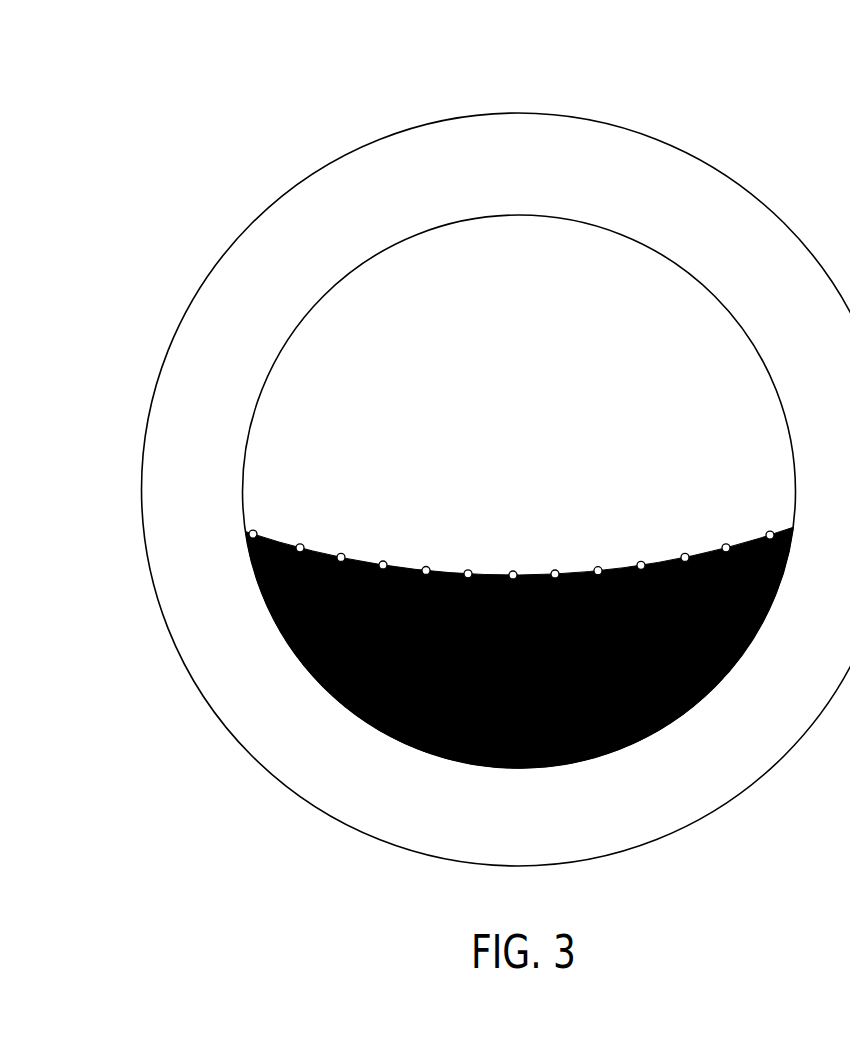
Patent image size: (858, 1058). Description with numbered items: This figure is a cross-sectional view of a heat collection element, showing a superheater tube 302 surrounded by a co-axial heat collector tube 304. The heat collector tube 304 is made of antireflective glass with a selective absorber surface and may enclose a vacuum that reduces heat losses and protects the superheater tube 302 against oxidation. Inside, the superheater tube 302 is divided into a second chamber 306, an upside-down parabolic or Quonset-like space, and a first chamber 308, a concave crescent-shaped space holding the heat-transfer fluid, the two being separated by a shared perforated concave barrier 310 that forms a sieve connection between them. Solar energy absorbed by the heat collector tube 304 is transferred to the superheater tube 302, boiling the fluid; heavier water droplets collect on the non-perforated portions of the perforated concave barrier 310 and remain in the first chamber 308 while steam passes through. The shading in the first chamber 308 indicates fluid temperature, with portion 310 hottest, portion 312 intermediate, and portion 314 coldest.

The superheater tube 302 is at (525, 207).
The heat collector tube 304 is at (507, 103).
The second chamber 306 is at (525, 293).
The first chamber 308 is at (278, 582).
The perforated concave barrier 310 is at (272, 530).
The intermediate temperature portion 312 is at (355, 553).
The coldest temperature portion 314 is at (403, 562).